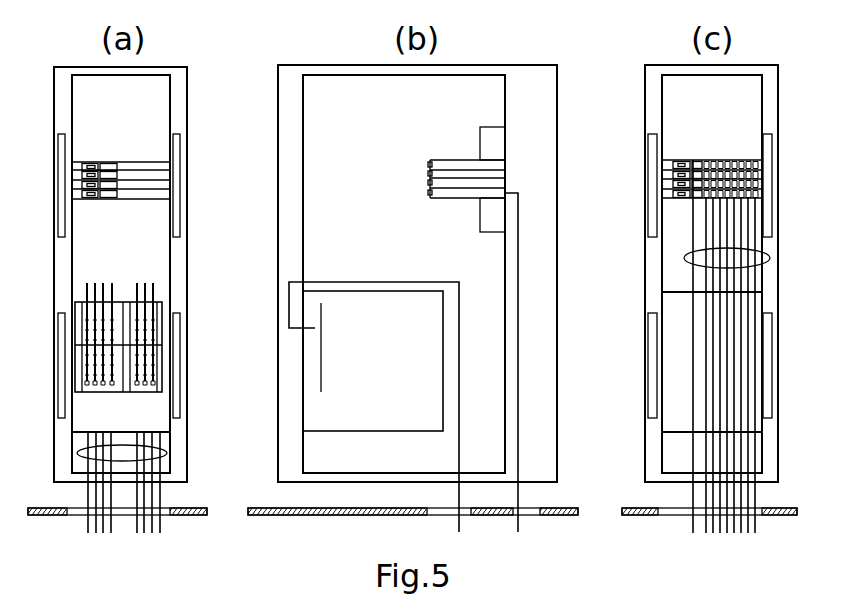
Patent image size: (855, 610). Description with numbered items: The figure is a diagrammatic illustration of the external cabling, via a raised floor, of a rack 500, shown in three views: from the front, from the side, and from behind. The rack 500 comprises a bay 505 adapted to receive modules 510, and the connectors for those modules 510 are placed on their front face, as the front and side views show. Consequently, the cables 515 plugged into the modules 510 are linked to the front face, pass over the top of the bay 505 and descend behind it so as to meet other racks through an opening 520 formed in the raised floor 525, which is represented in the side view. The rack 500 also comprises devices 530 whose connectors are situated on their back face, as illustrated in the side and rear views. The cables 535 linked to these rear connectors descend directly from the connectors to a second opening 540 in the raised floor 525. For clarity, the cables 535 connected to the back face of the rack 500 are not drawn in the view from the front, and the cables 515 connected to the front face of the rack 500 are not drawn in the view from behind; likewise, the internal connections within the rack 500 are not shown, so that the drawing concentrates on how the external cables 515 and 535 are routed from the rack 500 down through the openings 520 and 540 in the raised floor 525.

The rack 500 is at (178, 96).
The bay 505 is at (145, 407).
The modules 510 is at (153, 323).
The cables 515 is at (162, 447).
The opening 520 is at (125, 516).
The raised floor 525 is at (53, 516).
The devices 530 is at (132, 165).
The cables 535 is at (505, 264).
The opening 540 is at (518, 517).